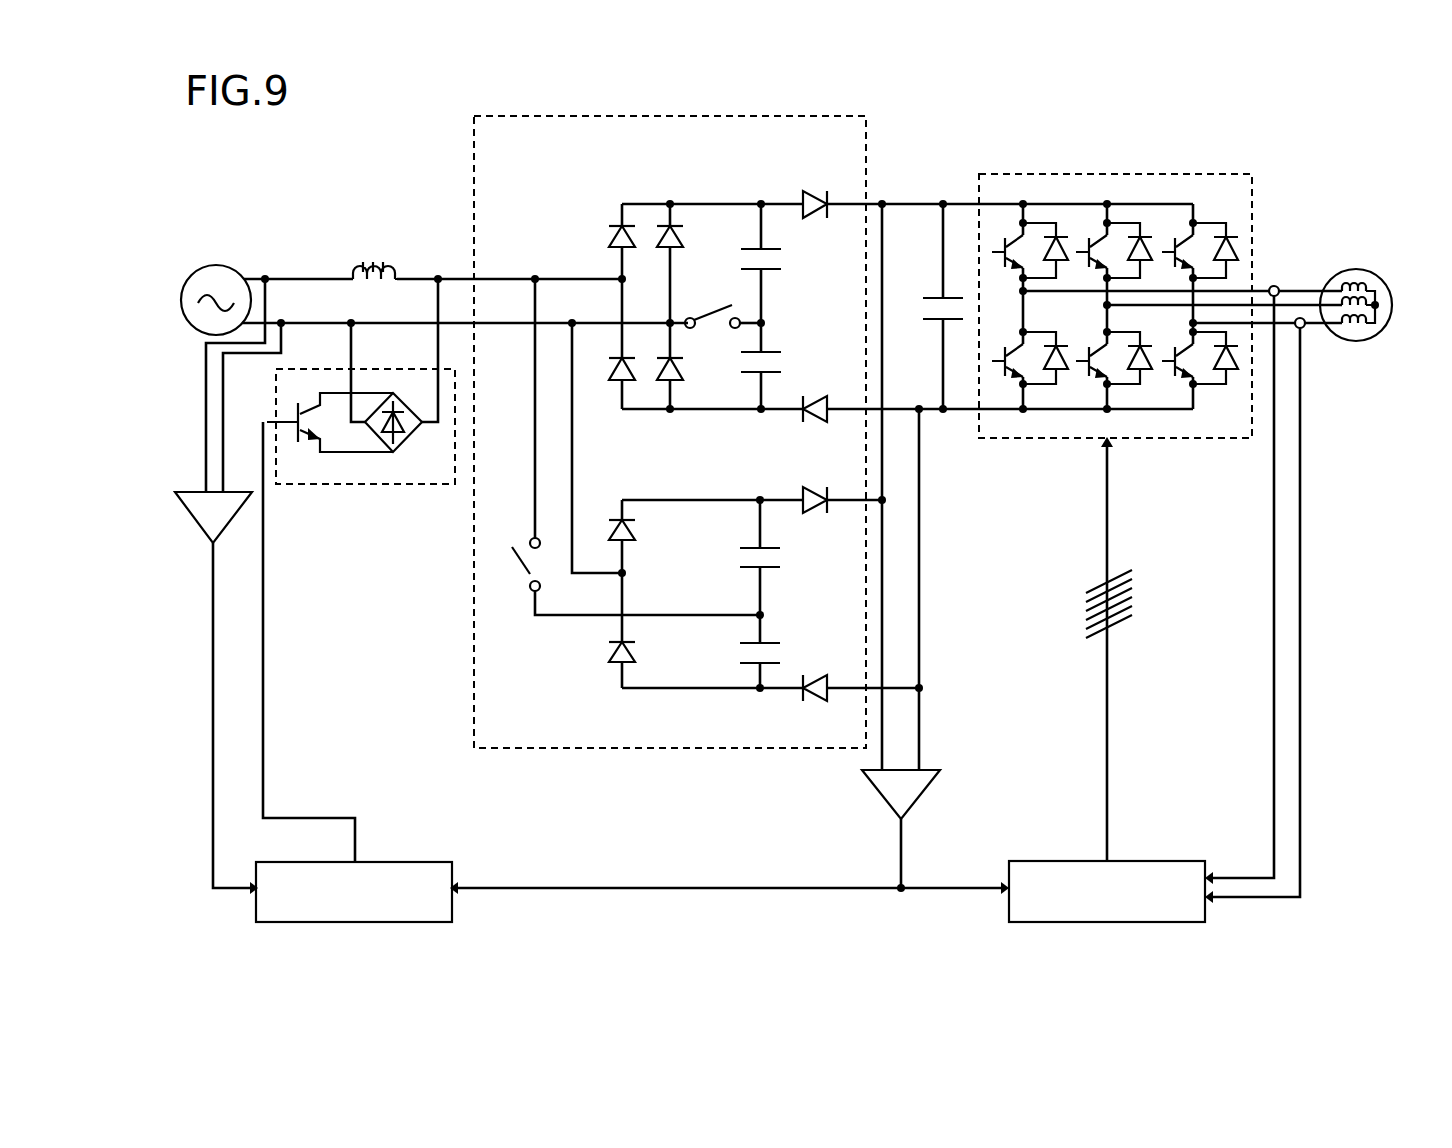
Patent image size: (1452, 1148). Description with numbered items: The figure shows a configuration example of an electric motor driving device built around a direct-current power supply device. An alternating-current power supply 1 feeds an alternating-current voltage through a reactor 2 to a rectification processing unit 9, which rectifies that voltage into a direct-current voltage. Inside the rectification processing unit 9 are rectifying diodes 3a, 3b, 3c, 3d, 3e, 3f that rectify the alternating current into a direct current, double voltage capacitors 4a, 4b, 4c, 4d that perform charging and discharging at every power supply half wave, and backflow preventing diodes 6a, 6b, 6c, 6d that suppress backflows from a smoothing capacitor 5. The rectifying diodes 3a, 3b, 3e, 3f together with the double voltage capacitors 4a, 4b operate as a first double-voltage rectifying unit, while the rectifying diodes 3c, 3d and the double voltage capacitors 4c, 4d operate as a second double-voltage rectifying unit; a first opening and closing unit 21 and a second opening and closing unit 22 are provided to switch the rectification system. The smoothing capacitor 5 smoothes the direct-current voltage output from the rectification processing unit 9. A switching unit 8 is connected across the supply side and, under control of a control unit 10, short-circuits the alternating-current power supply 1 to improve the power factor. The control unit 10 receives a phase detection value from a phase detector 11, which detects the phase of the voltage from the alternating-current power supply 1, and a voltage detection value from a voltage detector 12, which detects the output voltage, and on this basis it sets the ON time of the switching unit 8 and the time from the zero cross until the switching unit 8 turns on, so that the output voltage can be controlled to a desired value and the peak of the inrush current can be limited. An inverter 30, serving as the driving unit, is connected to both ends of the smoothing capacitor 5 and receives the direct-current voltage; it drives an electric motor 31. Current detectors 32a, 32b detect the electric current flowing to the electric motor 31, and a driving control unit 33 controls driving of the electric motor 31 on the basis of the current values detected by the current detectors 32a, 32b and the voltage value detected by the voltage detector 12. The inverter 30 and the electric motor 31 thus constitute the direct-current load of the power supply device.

The alternating-current power supply 1 is at (220, 264).
The reactor 2 is at (373, 255).
The rectifying diode 3a is at (612, 245).
The rectifying diode 3b is at (610, 383).
The rectifying diode 3c is at (632, 537).
The rectifying diode 3d is at (613, 664).
The rectifying diode 3e is at (678, 240).
The rectifying diode 3f is at (673, 385).
The double voltage capacitor 4a is at (785, 208).
The double voltage capacitor 4b is at (770, 375).
The double voltage capacitor 4c is at (744, 547).
The double voltage capacitor 4d is at (747, 667).
The smoothing capacitor 5 is at (957, 290).
The backflow preventing diode 6a is at (820, 200).
The backflow preventing diode 6b is at (823, 398).
The backflow preventing diode 6c is at (818, 505).
The backflow preventing diode 6d is at (820, 680).
The switching unit 8 is at (430, 486).
The rectification processing unit 9 is at (474, 160).
The control unit 10 is at (404, 862).
The phase detector 11 is at (237, 515).
The voltage detector 12 is at (922, 797).
The first opening and closing unit 21 is at (713, 304).
The second opening and closing unit 22 is at (529, 575).
The inverter 30 is at (1150, 174).
The electric motor 31 is at (1355, 274).
The current detector 32a is at (1273, 286).
The current detector 32b is at (1302, 330).
The driving control unit 33 is at (1155, 861).